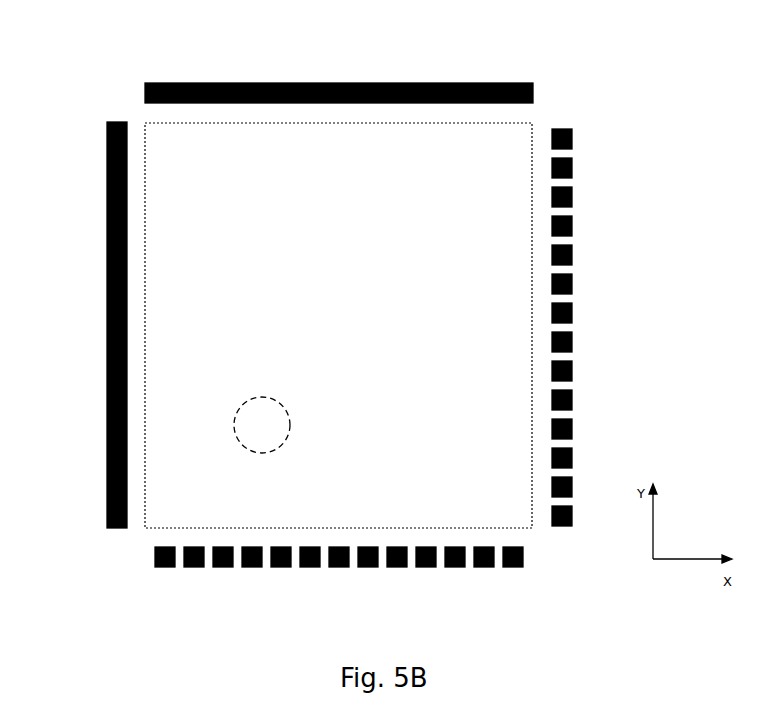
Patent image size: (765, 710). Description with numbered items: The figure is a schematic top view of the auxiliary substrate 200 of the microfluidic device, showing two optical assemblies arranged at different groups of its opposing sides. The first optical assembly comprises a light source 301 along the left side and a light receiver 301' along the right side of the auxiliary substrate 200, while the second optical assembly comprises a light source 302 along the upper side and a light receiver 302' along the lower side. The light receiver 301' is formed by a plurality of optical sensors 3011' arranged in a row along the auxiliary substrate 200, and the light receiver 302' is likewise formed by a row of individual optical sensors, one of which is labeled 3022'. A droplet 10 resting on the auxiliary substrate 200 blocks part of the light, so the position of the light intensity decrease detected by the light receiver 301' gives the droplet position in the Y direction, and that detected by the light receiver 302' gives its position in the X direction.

The light source 302 is at (354, 64).
The light source 301 is at (77, 325).
The auxiliary substrate 200 is at (513, 452).
The optical sensor 3011' is at (608, 134).
The light receiver 301' is at (612, 342).
The light receiver 302' is at (332, 591).
The second touch electrode block 3022' is at (553, 577).
The droplet 10 is at (246, 444).